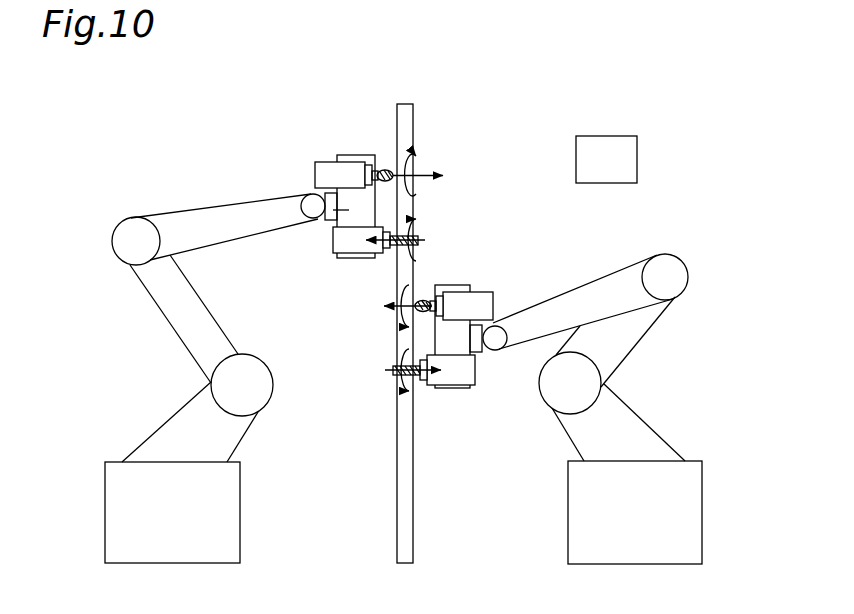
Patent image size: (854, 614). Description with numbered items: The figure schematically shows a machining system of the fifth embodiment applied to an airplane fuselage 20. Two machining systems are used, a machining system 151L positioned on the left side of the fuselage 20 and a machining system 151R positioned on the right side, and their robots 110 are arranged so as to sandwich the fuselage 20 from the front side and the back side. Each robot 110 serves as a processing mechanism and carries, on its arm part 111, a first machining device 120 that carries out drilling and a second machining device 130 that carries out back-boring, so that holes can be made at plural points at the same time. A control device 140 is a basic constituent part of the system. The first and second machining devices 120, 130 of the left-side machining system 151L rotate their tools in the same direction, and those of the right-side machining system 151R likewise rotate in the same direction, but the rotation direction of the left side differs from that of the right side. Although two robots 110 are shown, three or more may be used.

The fuselage 20 is at (419, 112).
The control device 140 is at (640, 160).
The machining system 151L is at (152, 332).
The machining system 151R is at (647, 353).
The robot 110 is at (161, 413).
The arm part 111 is at (325, 221).
The first machining device 120 is at (329, 158).
The second machining device 130 is at (337, 260).